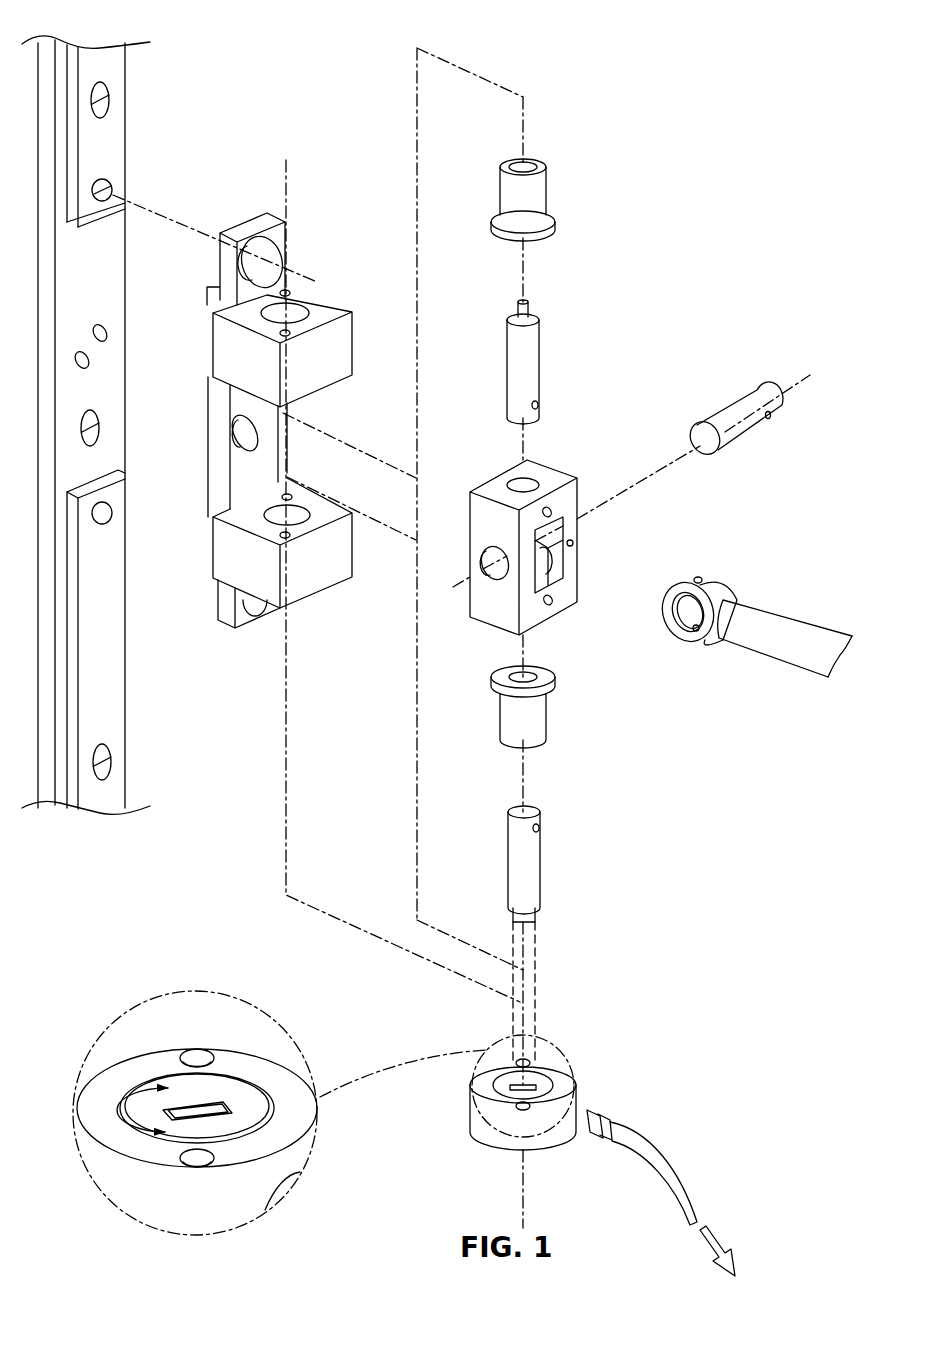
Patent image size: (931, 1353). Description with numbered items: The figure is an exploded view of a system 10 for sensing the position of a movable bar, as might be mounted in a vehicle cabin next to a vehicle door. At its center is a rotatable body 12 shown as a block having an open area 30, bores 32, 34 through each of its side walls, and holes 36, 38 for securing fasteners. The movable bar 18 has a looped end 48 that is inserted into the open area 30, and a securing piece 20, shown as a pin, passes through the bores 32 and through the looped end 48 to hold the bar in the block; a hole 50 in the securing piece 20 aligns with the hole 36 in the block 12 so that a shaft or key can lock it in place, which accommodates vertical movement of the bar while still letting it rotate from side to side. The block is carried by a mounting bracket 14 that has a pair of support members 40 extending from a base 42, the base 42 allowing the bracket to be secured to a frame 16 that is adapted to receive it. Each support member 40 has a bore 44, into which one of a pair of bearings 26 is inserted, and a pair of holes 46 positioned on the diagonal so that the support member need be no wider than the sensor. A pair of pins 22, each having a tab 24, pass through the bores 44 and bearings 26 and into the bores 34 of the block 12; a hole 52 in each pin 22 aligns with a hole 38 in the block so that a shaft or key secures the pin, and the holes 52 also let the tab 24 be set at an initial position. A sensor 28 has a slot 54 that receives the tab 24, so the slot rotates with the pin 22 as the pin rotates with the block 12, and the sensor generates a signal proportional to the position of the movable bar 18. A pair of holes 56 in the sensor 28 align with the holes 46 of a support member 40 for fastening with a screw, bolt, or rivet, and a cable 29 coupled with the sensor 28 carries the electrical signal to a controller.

The system 10 is at (702, 98).
The rotatable body 12 is at (551, 555).
The mounting bracket 14 is at (279, 382).
The frame 16 is at (140, 77).
The movable bar 18 is at (779, 604).
The securing piece 20 is at (767, 457).
The pins 22 is at (597, 667).
The tab 24 is at (538, 320).
The bearings 26 is at (555, 193).
The sensor 28 is at (432, 1137).
The cable 29 is at (661, 1167).
The open area 30 is at (575, 578).
The bores 32 is at (565, 562).
The bores 34 is at (518, 480).
The hole 36 is at (574, 543).
The holes 38 is at (551, 512).
The support members 40 is at (352, 340).
The base 42 is at (268, 437).
The bore 44 is at (297, 305).
The holes 46 is at (287, 291).
The looped end 48 is at (716, 575).
The hole 50 is at (771, 418).
The hole 52 is at (539, 405).
The slot 54 is at (531, 1086).
The holes 56 is at (520, 1061).